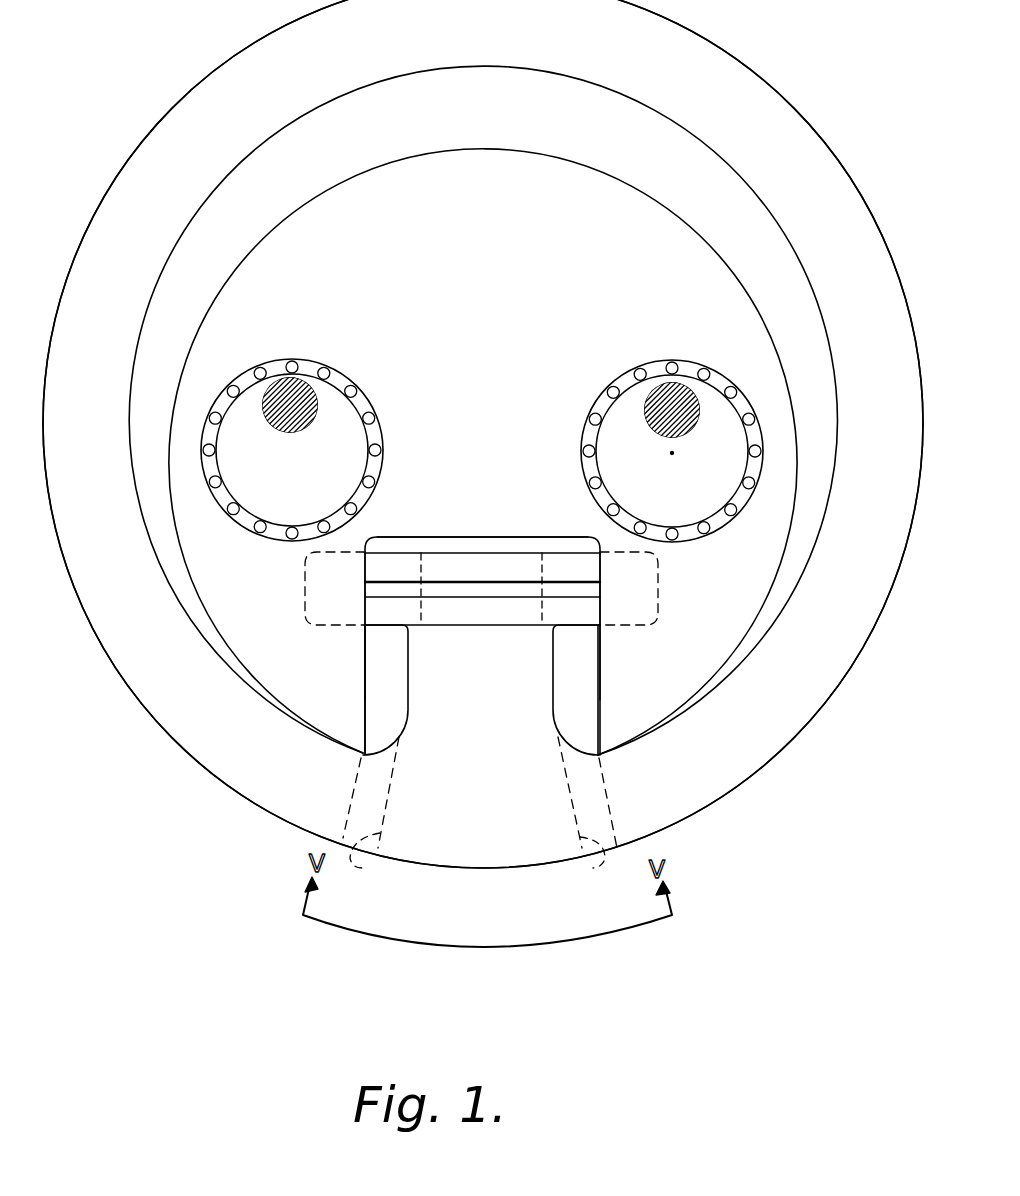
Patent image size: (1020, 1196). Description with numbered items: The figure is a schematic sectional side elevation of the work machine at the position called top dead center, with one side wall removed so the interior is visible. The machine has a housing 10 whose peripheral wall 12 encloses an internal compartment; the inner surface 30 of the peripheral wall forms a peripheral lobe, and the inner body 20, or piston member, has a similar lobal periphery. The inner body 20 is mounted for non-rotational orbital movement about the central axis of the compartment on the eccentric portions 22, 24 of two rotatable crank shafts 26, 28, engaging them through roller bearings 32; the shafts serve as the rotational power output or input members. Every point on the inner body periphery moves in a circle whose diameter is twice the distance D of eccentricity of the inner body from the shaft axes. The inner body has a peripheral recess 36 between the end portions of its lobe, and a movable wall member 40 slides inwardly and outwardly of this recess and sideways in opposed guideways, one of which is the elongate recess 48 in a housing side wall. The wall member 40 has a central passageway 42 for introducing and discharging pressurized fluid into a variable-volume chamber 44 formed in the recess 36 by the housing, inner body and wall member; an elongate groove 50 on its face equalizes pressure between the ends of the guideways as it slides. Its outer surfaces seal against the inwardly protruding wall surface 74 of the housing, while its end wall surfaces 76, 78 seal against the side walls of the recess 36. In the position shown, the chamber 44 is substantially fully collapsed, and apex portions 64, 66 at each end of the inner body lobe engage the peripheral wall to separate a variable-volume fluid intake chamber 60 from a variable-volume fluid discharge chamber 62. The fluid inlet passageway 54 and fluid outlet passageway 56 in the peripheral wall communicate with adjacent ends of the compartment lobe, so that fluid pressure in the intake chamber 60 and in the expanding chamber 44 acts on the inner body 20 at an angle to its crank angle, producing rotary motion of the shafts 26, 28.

The housing 10 is at (483, 434).
The peripheral wall 12 is at (483, 434).
The inner surface 30 is at (655, 105).
The inner body 20 is at (499, 312).
The eccentric portion 22 is at (317, 450).
The eccentric portion 24 is at (651, 451).
The crank shaft 26 is at (304, 380).
The crank shaft 28 is at (674, 385).
The roller bearings 32 is at (482, 450).
The distance of eccentricity D is at (674, 453).
The peripheral recess 36 is at (514, 540).
The variable-volume chamber 44 is at (482, 526).
The central passageway 42 is at (442, 605).
The inwardly protruding wall surface 74 is at (517, 615).
The elongate groove 50 is at (480, 590).
The end wall surface 76 is at (341, 589).
The end wall surface 78 is at (620, 589).
The elongate recess 48 is at (494, 606).
The movable wall member 40 is at (378, 623).
The variable-volume fluid intake chamber 60 is at (399, 736).
The variable-volume fluid discharge chamber 62 is at (563, 736).
The apex portion 64 is at (326, 729).
The apex portion 66 is at (634, 728).
The fluid inlet passageway 54 is at (362, 872).
The fluid outlet passageway 56 is at (592, 870).